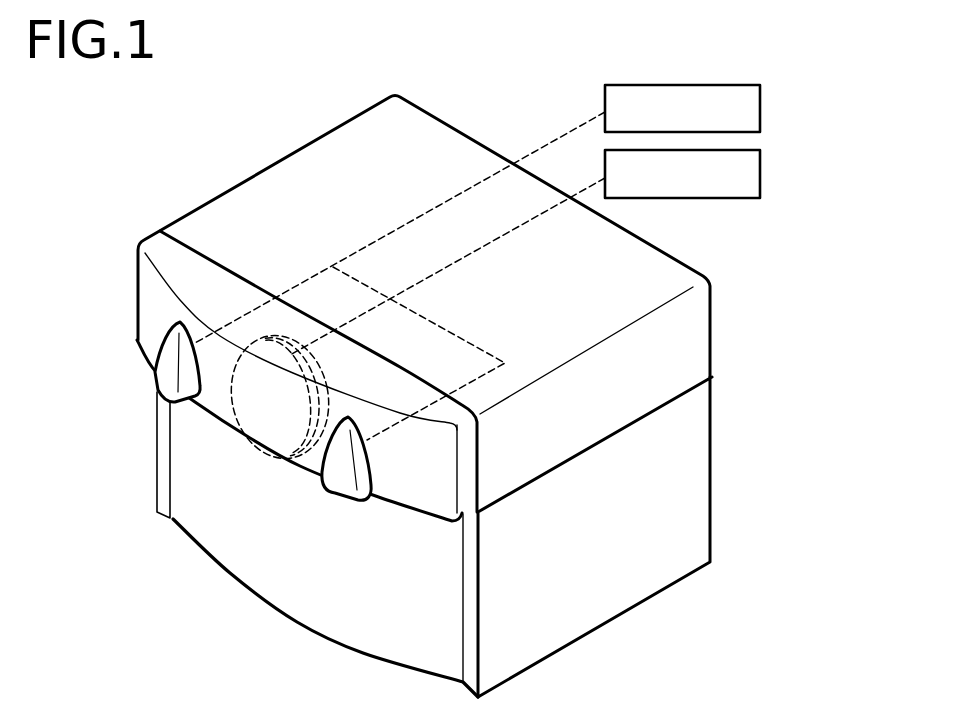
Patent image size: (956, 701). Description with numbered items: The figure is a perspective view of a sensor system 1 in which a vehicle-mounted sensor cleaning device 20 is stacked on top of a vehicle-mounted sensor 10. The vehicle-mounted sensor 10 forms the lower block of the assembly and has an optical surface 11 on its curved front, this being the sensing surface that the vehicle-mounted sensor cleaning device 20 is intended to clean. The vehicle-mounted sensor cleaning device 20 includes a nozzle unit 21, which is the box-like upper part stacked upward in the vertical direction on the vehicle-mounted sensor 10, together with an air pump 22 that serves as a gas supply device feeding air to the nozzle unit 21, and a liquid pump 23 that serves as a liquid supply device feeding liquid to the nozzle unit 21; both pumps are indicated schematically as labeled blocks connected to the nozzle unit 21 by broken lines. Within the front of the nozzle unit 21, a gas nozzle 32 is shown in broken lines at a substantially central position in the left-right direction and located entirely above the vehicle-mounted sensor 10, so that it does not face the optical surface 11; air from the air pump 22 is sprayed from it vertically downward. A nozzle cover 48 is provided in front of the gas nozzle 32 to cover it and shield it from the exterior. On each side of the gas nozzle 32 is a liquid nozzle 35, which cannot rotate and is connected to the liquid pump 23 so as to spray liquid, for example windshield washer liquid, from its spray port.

The sensor system 1 is at (120, 178).
The vehicle-mounted sensor 10 is at (712, 458).
The optical surface 11 is at (300, 605).
The vehicle-mounted sensor cleaning device 20 is at (508, 298).
The nozzle unit 21 is at (712, 333).
The air pump 22 is at (762, 174).
The liquid pump 23 is at (762, 108).
The gas nozzle 32 is at (244, 425).
The liquid nozzle 35 is at (160, 378).
The nozzle cover 48 is at (143, 299).